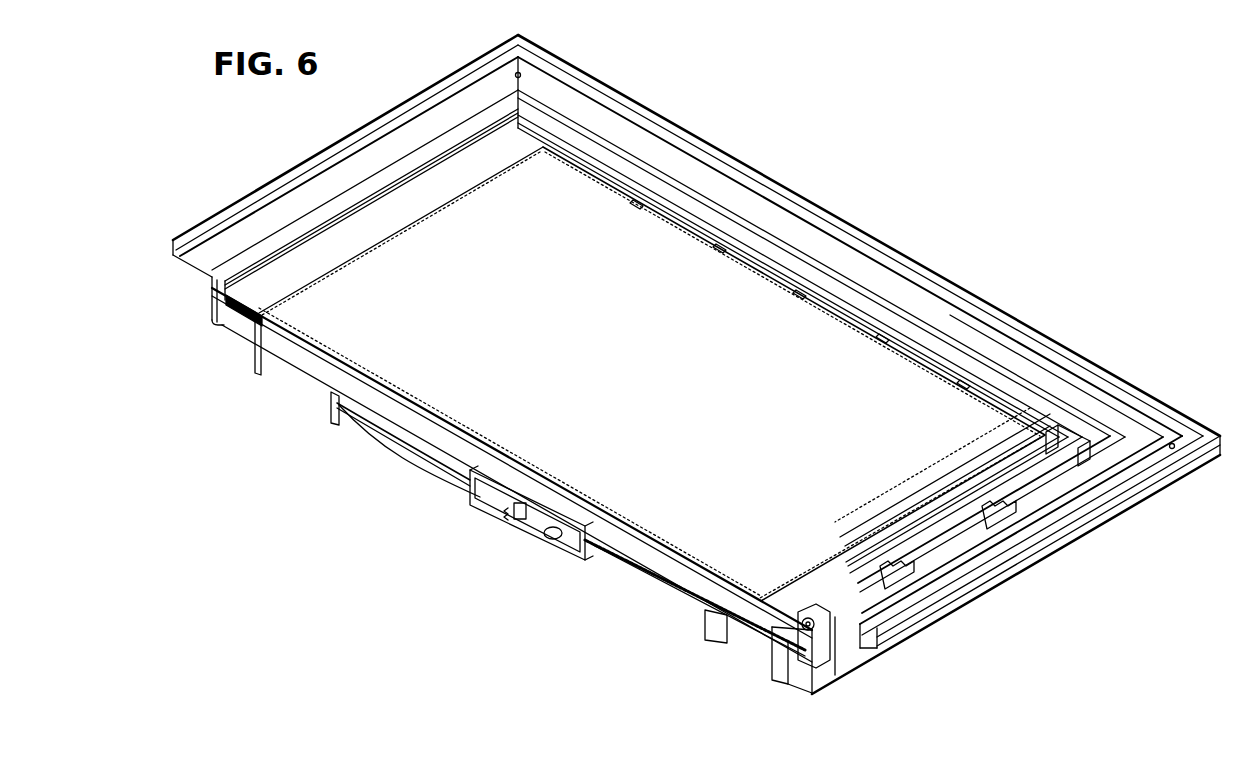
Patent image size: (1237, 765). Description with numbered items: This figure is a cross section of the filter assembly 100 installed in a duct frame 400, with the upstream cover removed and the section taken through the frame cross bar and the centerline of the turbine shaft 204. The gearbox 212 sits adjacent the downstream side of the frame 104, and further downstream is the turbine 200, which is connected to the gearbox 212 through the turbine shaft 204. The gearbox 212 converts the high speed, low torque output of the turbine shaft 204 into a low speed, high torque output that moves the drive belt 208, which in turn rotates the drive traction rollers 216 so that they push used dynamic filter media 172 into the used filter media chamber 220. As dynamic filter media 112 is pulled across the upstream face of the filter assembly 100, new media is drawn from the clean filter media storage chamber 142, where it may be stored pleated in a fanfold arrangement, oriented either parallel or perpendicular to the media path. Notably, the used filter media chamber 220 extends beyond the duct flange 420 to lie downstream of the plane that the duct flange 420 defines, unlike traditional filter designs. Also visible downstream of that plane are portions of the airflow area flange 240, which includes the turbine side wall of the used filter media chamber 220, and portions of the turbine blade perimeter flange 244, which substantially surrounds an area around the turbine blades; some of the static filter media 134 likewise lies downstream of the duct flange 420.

The filter assembly 100 is at (285, 137).
The frame 104 is at (843, 260).
The dynamic filter media 112 is at (824, 432).
The static filter media 134 is at (268, 355).
The clean filter media storage chamber 142 is at (243, 327).
The used dynamic filter media 172 is at (807, 650).
The turbine 200 is at (433, 463).
The turbine shaft 204 is at (523, 528).
The drive belt 208 is at (607, 557).
The gearbox 212 is at (548, 540).
The drive traction rollers 216 is at (877, 577).
The used filter media chamber 220 is at (790, 668).
The airflow area flange 240 is at (263, 367).
The turbine blade perimeter flange 244 is at (337, 420).
The duct frame 400 is at (1088, 527).
The duct flange 420 is at (220, 325).